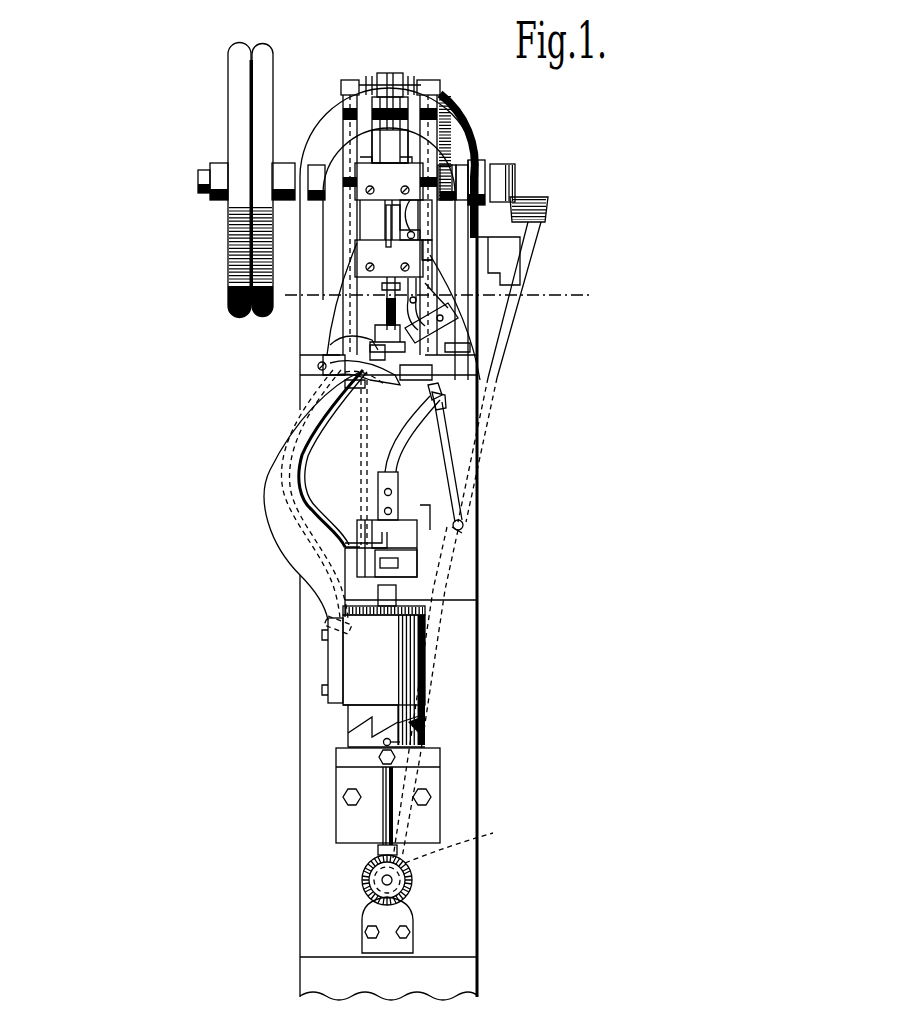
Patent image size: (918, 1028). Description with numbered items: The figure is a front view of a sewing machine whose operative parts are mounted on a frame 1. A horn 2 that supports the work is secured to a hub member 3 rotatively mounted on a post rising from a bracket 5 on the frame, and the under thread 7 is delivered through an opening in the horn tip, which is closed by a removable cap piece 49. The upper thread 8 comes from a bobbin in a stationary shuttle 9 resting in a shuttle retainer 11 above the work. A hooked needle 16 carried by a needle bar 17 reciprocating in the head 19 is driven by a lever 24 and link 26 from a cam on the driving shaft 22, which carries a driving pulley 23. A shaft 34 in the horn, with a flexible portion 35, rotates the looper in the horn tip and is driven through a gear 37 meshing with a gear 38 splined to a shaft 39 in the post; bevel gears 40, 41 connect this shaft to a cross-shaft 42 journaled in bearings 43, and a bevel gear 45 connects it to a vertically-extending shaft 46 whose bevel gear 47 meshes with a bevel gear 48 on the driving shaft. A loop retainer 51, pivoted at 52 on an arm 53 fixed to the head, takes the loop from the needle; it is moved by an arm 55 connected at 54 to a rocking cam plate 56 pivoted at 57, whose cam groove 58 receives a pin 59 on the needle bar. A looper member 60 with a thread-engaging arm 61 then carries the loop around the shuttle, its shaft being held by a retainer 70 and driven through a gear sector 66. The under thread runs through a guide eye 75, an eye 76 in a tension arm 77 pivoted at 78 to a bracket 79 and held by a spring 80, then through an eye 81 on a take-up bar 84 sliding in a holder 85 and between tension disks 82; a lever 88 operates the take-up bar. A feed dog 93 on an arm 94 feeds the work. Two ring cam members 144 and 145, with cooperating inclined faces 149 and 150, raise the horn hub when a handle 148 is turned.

The frame 1 is at (478, 690).
The horn 2 is at (310, 412).
The bearing or hub member 3 is at (422, 657).
The bracket 5 is at (340, 780).
The under thread 7 is at (430, 527).
The upper thread 8 is at (433, 297).
The shuttle 9 is at (342, 349).
The shuttle retainer 11 is at (333, 366).
The hooked needle 16 is at (384, 306).
The needle bar 17 is at (395, 147).
The head 19 is at (456, 183).
The driving shaft 22 is at (271, 166).
The driving pulley 23 is at (246, 50).
The lever 24 is at (397, 78).
The link 26 is at (390, 100).
The shaft 34 is at (292, 522).
The flexible portion 35 is at (280, 440).
The gear 37 is at (328, 630).
The gear 38 is at (426, 608).
The shaft 39 is at (384, 830).
The bevel gear 40 is at (378, 851).
The bevel gear 41 is at (364, 876).
The cross-shaft 42 is at (393, 880).
The bearings 43 is at (404, 910).
The bevel gear 45 is at (461, 841).
The vertically-extending shaft 46 is at (497, 378).
The bevel gear 47 is at (537, 198).
The bevel gear 48 is at (510, 164).
The cap piece 49 is at (345, 382).
The loop retainer 51 is at (383, 314).
The pivot 52 is at (414, 312).
The arm 53 is at (428, 262).
The pivot connection 54 is at (450, 310).
The arm 55 is at (435, 298).
The rocking cam plate 56 is at (412, 246).
The pivot 57 is at (413, 203).
The cam groove 58 is at (388, 238).
The pin 59 is at (383, 212).
The looper member 60 is at (370, 334).
The thread-engaging arm 61 is at (377, 338).
The gear sector 66 is at (445, 176).
The retainer 70 is at (440, 128).
The guide eye 75 is at (378, 538).
The eye 76 is at (464, 526).
The tension arm 77 is at (450, 462).
The pivot 78 is at (428, 393).
The bracket 79 is at (398, 444).
The spring 80 is at (440, 408).
The eye 81 is at (407, 517).
The tension disks 82 is at (370, 517).
The take-up bar 84 is at (400, 562).
The holder 85 is at (400, 580).
The lever 88 is at (366, 430).
The feed dog 93 is at (405, 380).
The arm 94 is at (462, 341).
The cam member 144 is at (346, 706).
The cam member 145 is at (358, 738).
The handle 148 is at (400, 742).
The cam face 149 is at (368, 716).
The cam face 150 is at (412, 727).